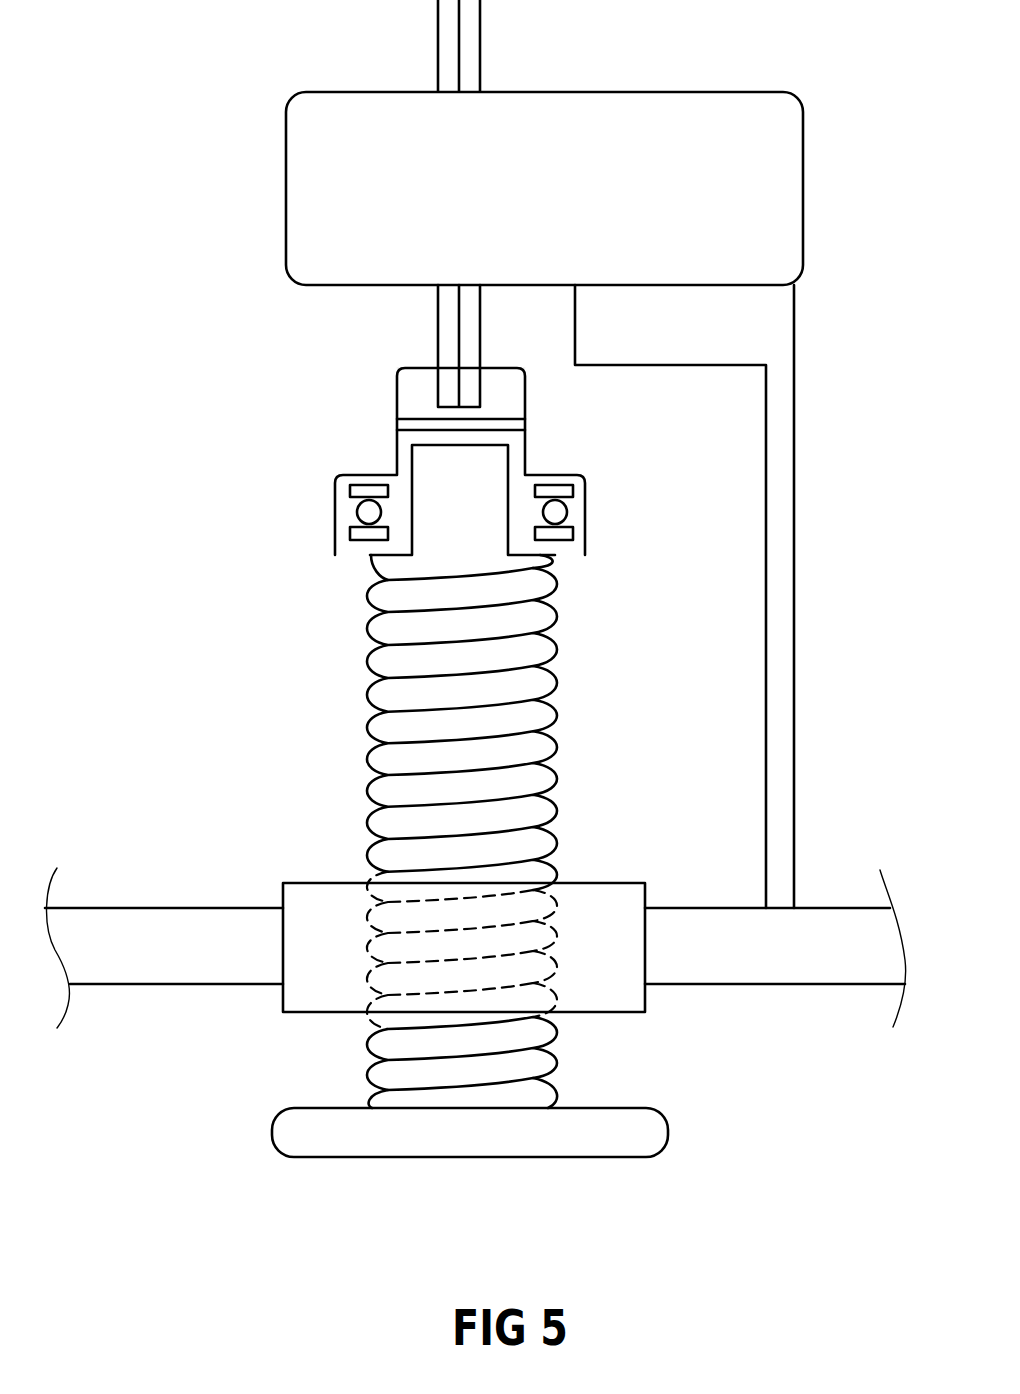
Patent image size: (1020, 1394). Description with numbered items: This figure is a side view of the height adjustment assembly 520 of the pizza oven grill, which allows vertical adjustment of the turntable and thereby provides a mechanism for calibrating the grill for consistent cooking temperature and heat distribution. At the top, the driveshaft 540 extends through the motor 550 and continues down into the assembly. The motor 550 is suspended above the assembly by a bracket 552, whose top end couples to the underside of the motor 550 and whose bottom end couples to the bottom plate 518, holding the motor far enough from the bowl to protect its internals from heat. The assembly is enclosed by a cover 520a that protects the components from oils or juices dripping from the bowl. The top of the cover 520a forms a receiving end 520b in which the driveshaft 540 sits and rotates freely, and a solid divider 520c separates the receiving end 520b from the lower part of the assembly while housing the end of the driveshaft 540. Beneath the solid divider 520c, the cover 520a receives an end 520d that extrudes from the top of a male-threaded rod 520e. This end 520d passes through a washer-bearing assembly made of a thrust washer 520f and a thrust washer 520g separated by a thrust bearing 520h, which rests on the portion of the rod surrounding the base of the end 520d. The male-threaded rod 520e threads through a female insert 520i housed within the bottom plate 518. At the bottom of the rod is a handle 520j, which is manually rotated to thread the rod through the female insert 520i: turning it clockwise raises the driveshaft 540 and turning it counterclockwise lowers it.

The bottom plate 518 is at (178, 963).
The height adjustment assembly 520 is at (225, 360).
The cover 520a is at (398, 368).
The receiving end 520b is at (512, 400).
The solid divider 520c is at (405, 424).
The end 520d is at (490, 450).
The male-threaded rod 520e is at (372, 607).
The thrust washer 520f is at (362, 492).
The thrust washer 520g is at (362, 536).
The thrust bearing 520h is at (557, 512).
The female insert 520i is at (618, 995).
The handle 520j is at (648, 1127).
The driveshaft 540 is at (446, 33).
The motor 550 is at (300, 168).
The bracket 552 is at (780, 505).